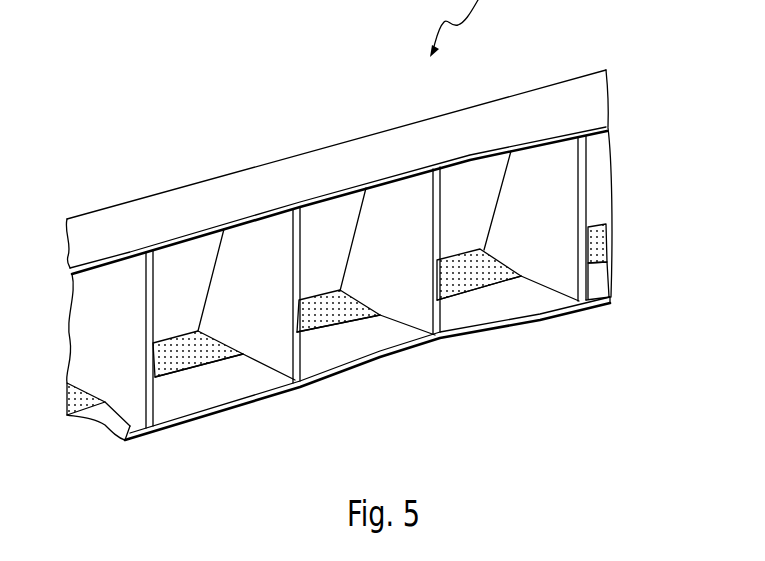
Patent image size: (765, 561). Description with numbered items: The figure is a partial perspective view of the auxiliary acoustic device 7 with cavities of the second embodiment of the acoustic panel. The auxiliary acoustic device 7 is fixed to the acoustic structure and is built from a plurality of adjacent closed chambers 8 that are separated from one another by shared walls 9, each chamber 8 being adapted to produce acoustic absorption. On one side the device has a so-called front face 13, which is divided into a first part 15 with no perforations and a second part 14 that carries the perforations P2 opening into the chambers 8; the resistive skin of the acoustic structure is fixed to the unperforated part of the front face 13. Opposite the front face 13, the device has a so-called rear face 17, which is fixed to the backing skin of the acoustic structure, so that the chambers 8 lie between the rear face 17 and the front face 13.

The auxiliary acoustic device 7 is at (152, 142).
The chambers 8 is at (238, 243).
The shared walls 9 is at (420, 300).
The front face 13 is at (543, 325).
The second part 14 is at (473, 272).
The first part 15 is at (252, 371).
The rear face 17 is at (400, 140).
The perforations P2 is at (603, 229).